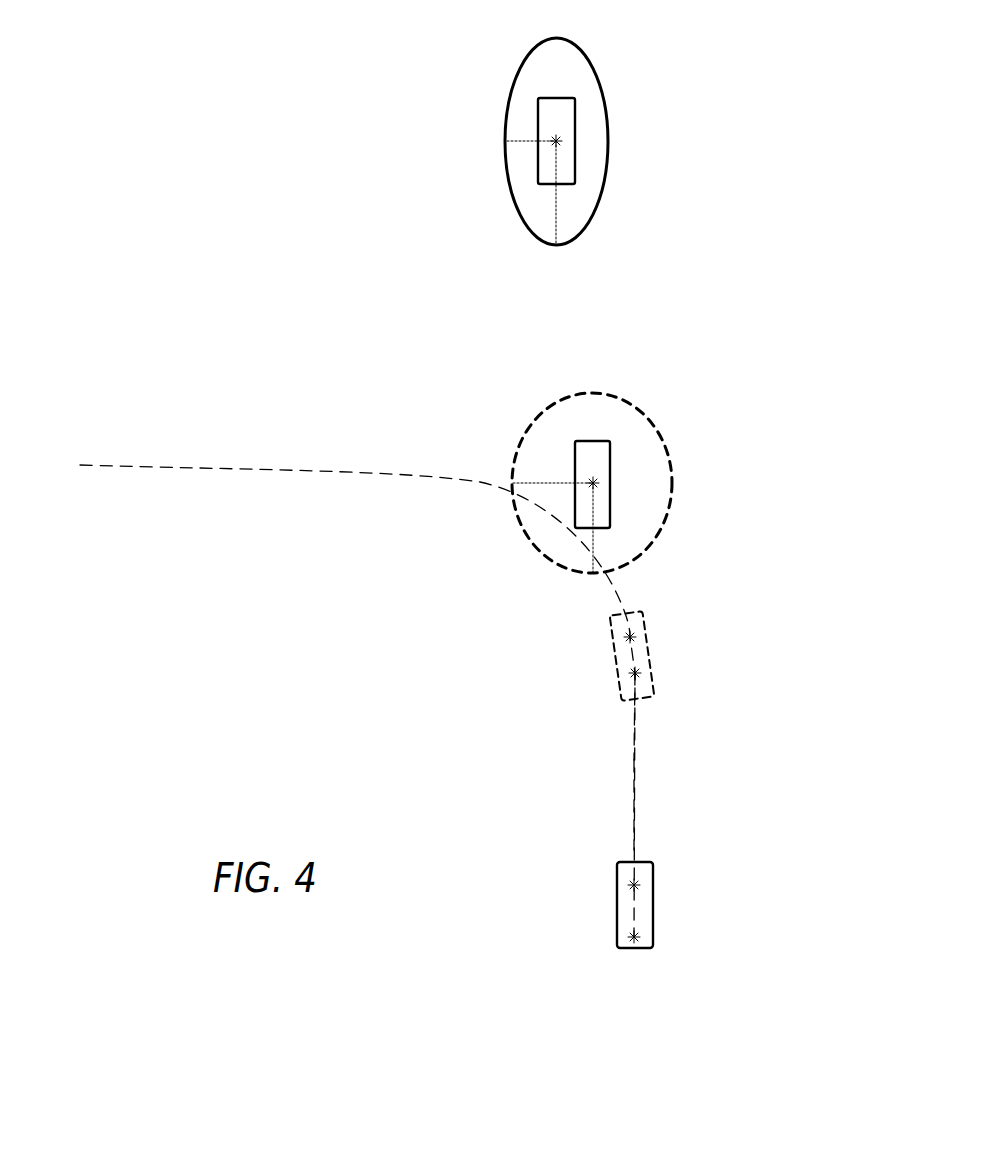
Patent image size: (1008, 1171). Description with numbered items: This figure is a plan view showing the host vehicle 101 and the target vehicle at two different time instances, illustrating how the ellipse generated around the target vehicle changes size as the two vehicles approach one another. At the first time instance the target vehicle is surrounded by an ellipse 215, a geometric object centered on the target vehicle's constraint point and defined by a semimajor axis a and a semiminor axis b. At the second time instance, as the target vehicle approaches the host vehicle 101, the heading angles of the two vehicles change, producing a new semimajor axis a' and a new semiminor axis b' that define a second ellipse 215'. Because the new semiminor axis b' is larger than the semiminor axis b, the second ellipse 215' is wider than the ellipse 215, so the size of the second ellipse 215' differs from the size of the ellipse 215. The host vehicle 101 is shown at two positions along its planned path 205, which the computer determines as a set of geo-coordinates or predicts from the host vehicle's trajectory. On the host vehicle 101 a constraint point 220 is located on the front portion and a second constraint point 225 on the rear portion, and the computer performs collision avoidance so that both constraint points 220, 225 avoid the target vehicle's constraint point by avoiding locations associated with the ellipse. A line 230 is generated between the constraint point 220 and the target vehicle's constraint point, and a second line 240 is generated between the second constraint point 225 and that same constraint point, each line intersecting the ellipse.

The host vehicle 101 is at (648, 642).
The planned path 205 is at (635, 762).
The ellipse 215 is at (507, 125).
The second ellipse 215' is at (548, 461).
The constraint point of the host vehicle 220 is at (630, 633).
The second constraint point of the host vehicle 225 is at (637, 678).
The line 230 is at (625, 802).
The second line 240 is at (612, 713).
The semimajor axis a is at (517, 203).
The semiminor axis b is at (496, 145).
The new semimajor axis a' is at (550, 548).
The new semiminor axis b' is at (526, 513).